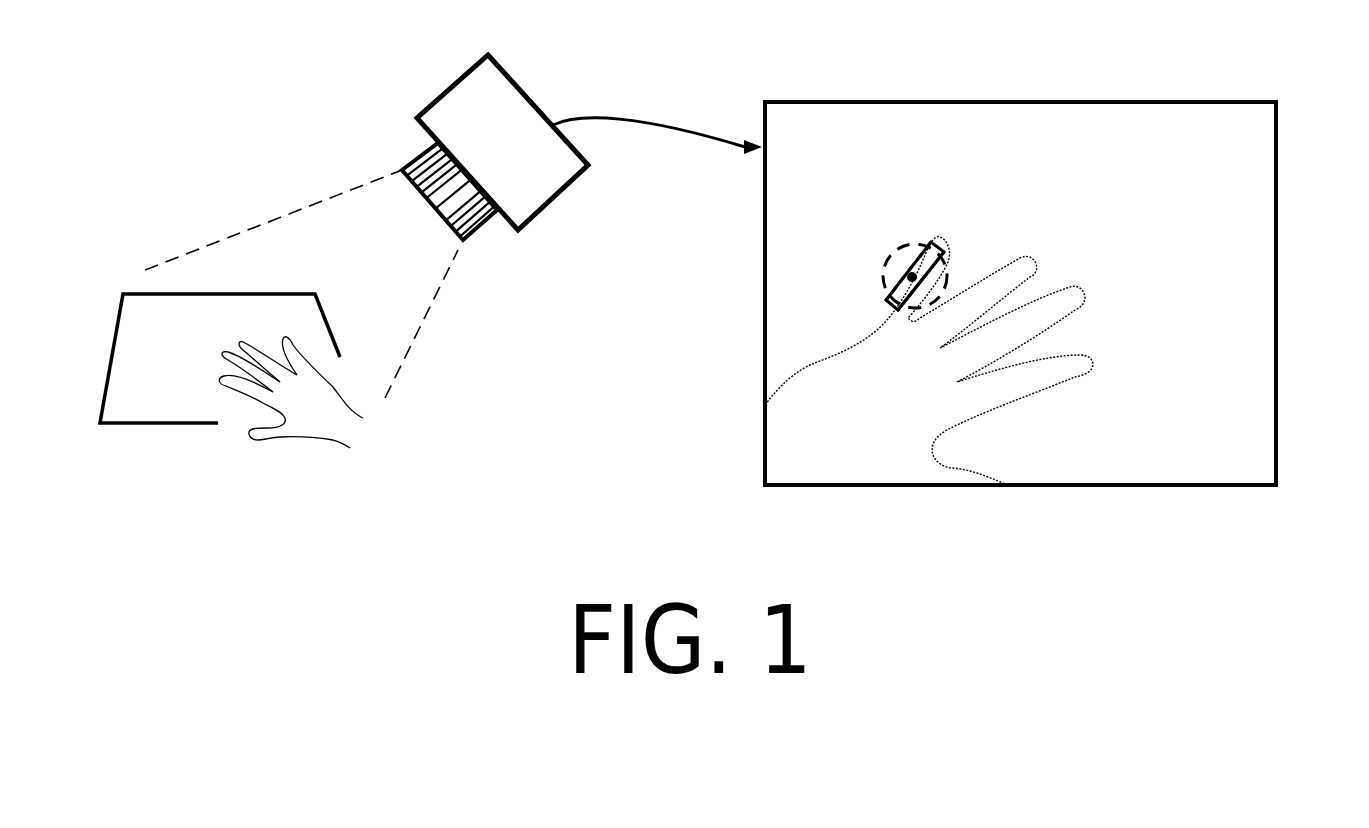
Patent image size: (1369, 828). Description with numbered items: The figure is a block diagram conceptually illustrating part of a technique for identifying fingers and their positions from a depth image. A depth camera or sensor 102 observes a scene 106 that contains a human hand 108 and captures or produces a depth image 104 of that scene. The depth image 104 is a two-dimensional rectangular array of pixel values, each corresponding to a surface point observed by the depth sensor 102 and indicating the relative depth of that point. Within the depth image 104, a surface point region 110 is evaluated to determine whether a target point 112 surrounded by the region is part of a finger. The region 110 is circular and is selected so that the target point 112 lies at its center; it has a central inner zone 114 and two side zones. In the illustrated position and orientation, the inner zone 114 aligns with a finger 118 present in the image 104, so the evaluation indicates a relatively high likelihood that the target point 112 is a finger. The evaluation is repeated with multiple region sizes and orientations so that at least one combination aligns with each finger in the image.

The depth camera or sensor 102 is at (480, 70).
The depth image 104 is at (1293, 139).
The scene 106 is at (138, 223).
The human hand 108 is at (262, 430).
The surface point region 110 is at (852, 230).
The target point 112 is at (945, 258).
The inner zone 114 is at (898, 308).
The finger 118 is at (933, 238).